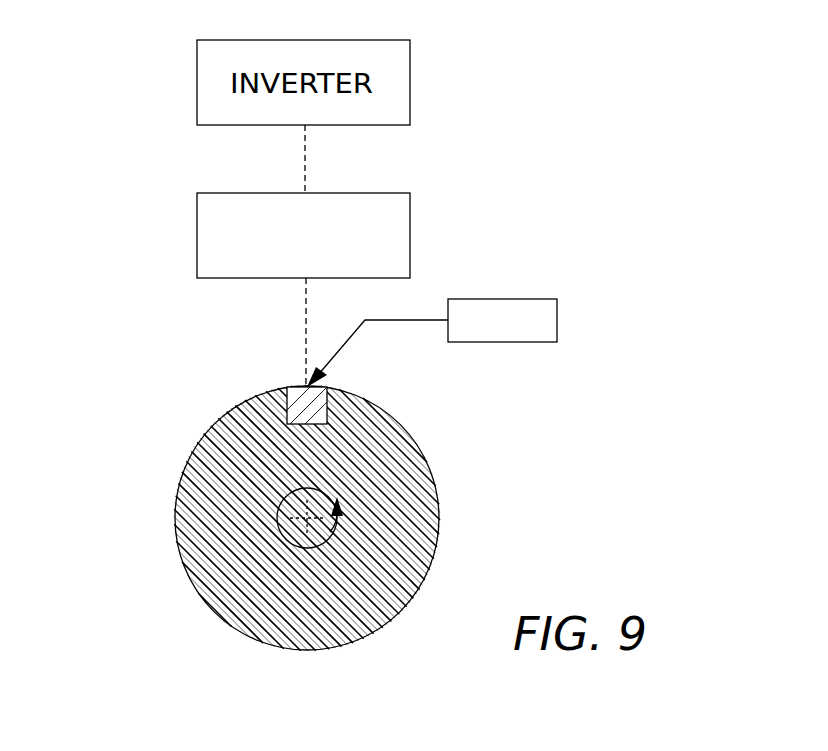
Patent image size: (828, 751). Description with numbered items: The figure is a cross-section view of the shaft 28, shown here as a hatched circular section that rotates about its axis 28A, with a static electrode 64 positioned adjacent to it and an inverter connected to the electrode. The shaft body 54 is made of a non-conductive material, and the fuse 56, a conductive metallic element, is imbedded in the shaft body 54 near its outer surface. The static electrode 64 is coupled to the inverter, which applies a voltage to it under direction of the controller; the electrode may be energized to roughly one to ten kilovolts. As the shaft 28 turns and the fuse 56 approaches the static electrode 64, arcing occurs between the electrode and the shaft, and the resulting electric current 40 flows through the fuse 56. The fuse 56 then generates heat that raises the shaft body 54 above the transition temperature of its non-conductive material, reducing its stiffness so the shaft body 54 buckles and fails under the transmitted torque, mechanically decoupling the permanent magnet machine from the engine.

The shaft 28 is at (150, 333).
The axis 28A is at (324, 503).
The electric current 40 is at (305, 333).
The shaft body 54 is at (261, 457).
The fuse 56 is at (545, 299).
The static electrode 64 is at (210, 193).